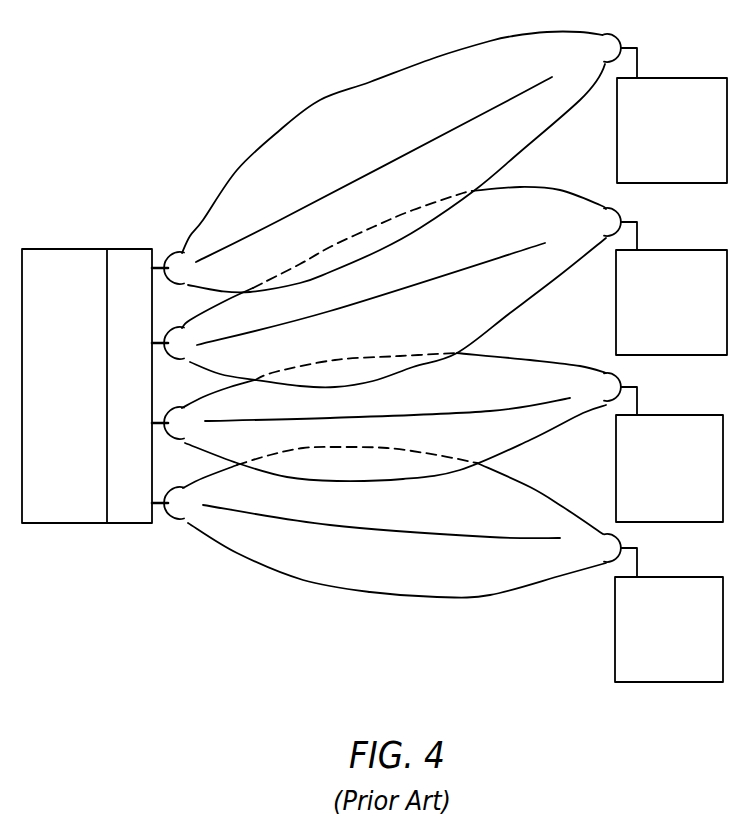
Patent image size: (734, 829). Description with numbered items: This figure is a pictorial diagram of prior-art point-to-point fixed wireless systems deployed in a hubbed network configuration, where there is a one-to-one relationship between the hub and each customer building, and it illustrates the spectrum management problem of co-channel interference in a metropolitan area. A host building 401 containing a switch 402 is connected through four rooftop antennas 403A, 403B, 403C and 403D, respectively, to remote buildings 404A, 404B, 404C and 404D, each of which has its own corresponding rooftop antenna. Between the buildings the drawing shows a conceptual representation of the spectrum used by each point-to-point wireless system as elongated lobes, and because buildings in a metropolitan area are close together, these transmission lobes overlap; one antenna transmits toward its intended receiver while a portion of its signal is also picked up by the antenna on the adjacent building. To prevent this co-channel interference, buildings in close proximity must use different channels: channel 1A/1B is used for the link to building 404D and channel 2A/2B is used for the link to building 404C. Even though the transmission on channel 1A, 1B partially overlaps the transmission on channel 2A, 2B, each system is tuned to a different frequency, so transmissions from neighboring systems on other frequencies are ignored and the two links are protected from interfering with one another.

The host building 401 is at (68, 248).
The switch 402 is at (116, 519).
The rooftop antenna 403A is at (183, 518).
The rooftop antenna 403B is at (185, 438).
The rooftop antenna 403C is at (185, 358).
The rooftop antenna 403D is at (181, 253).
The remote building 404A is at (669, 615).
The remote building 404B is at (669, 454).
The remote building 404C is at (671, 288).
The remote building 404D is at (672, 115).
The channel 1A is at (400, 126).
The channel 1B is at (403, 183).
The channel 2A is at (430, 256).
The channel 2B is at (437, 310).